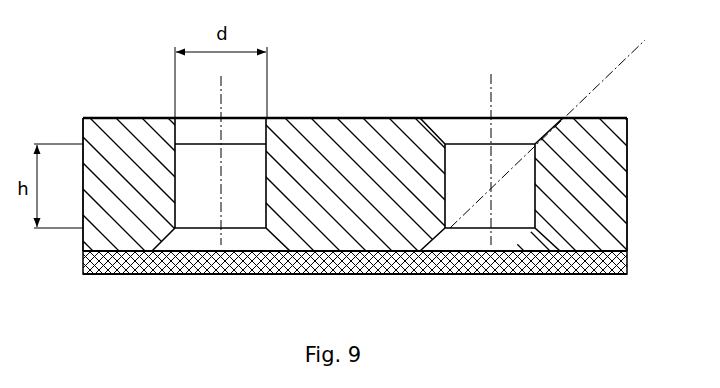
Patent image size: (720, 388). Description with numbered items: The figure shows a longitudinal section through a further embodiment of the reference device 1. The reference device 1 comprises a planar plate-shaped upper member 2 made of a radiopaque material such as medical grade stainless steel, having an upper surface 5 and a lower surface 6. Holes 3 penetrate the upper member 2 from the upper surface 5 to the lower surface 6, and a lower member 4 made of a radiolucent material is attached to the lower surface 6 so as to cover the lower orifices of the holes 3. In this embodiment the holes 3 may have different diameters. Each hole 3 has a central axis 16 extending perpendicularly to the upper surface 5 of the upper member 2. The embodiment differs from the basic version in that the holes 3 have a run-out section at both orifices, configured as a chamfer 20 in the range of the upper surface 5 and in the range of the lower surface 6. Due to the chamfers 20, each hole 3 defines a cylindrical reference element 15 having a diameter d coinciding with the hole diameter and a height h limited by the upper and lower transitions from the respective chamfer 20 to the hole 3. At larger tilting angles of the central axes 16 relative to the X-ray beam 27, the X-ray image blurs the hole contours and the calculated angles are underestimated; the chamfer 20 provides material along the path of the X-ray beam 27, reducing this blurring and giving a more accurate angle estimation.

The reference device 1 is at (510, 24).
The upper member 2 is at (590, 188).
The hole 3 is at (243, 162).
The lower member 4 is at (592, 275).
The upper surface 5 is at (352, 117).
The lower surface 6 is at (410, 275).
The reference element 15 is at (200, 143).
The central axis 16 is at (490, 103).
The chamfer 20 is at (167, 127).
The X-ray beam 27 is at (633, 54).